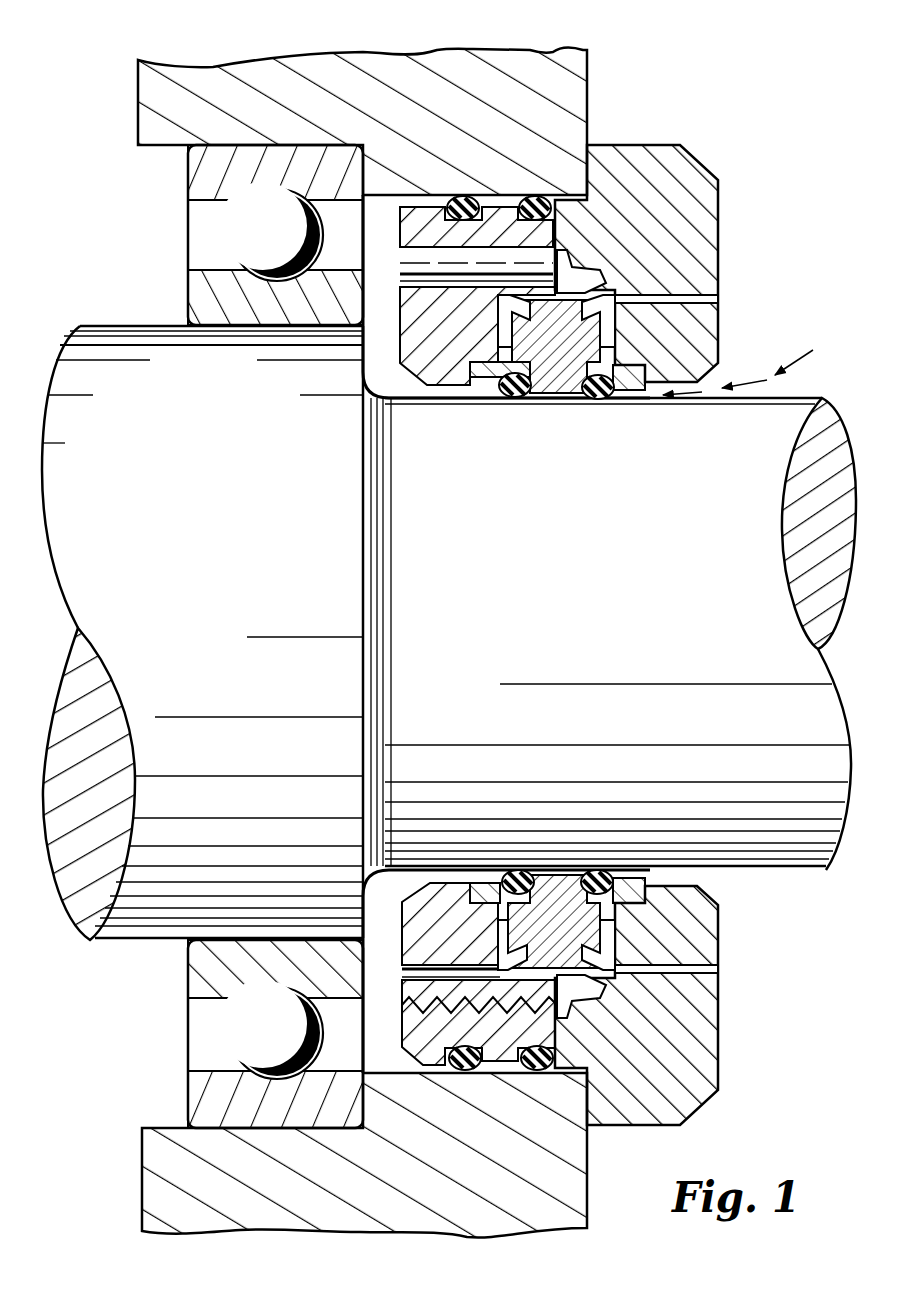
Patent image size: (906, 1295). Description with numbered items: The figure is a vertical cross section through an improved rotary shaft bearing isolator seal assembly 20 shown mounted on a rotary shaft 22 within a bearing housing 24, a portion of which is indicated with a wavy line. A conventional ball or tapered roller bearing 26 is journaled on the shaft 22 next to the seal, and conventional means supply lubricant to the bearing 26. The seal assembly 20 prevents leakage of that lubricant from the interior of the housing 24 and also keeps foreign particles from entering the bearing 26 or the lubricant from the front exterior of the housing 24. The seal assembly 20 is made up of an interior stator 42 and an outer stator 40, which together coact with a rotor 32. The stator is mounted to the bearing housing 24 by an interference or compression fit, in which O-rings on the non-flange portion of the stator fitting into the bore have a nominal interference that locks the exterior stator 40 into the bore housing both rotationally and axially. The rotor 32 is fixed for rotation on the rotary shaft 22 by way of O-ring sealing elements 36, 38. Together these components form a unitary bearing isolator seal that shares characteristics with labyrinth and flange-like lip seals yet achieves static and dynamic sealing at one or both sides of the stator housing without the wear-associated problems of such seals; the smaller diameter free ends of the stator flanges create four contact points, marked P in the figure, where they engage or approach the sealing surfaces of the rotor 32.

The rotary shaft bearing isolator seal assembly 20 is at (760, 229).
The rotary shaft 22 is at (668, 603).
The bearing housing 24 is at (526, 50).
The bearing 26 is at (188, 181).
The rotor 32 is at (563, 352).
The O-ring sealing element 36 is at (530, 390).
The O-ring sealing element 38 is at (599, 396).
The outer stator 40 is at (682, 180).
The interior stator 42 is at (422, 365).